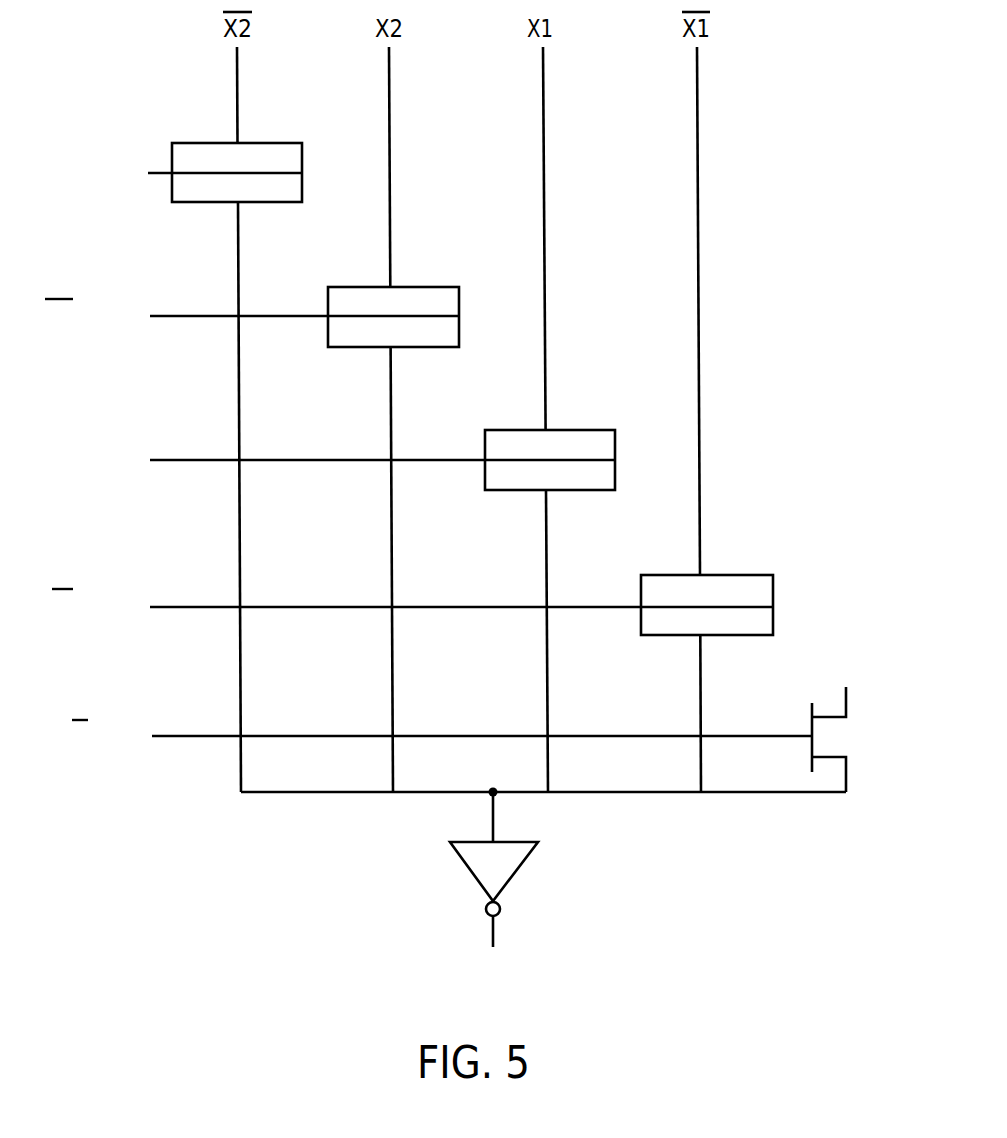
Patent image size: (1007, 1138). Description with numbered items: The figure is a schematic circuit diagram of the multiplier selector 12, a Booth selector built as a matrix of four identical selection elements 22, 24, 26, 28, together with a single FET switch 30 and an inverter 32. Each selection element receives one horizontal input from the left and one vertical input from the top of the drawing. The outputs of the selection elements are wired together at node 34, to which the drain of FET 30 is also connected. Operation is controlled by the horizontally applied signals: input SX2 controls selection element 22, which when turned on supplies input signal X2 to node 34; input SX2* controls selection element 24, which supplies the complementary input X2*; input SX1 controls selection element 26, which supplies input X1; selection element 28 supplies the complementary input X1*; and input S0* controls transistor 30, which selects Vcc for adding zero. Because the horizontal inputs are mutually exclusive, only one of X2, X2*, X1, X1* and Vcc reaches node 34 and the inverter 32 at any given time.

The multiplier selector 12 is at (318, 859).
The selection element 22 is at (298, 143).
The selection element 24 is at (455, 287).
The selection element 26 is at (611, 430).
The selection element 28 is at (766, 575).
The FET switch 30 is at (864, 738).
The inverter 32 is at (512, 880).
The node 34 is at (632, 793).